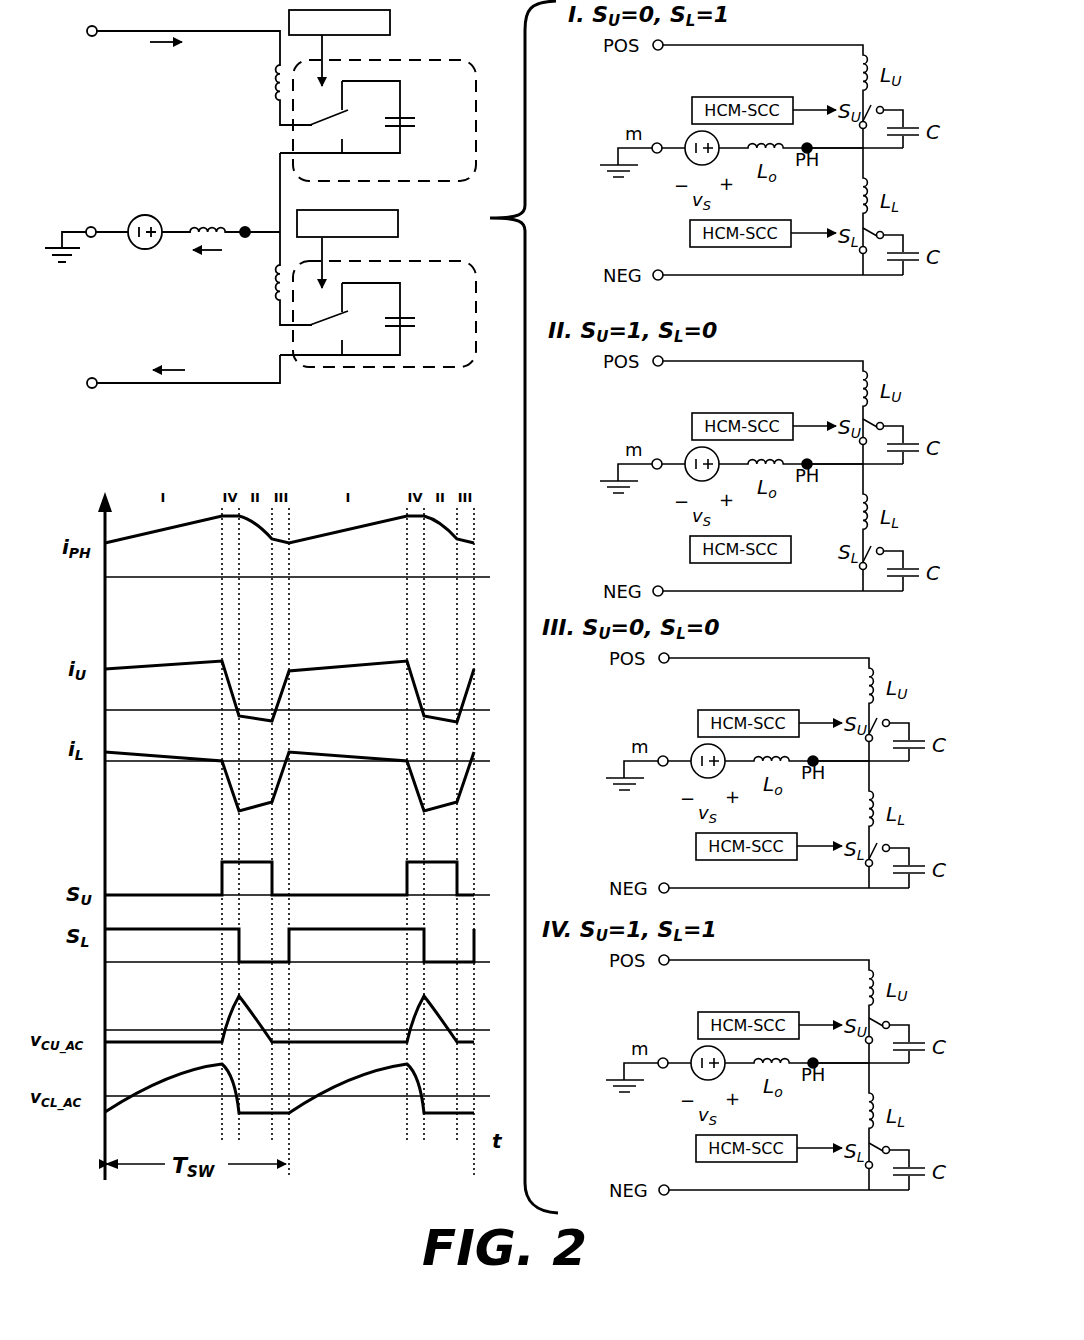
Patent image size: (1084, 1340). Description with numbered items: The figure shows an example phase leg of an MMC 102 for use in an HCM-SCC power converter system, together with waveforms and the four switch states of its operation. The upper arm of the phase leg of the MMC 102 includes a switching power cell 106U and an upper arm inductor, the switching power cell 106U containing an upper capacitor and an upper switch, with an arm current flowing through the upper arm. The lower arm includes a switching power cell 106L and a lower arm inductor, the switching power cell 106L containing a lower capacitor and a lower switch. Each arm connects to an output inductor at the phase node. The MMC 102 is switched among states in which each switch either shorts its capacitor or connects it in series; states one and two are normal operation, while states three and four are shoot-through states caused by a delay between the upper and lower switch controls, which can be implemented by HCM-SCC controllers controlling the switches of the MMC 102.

The MMC 102 is at (203, 410).
The upper switching power cell 106U is at (427, 60).
The lower switching power cell 106L is at (427, 262).